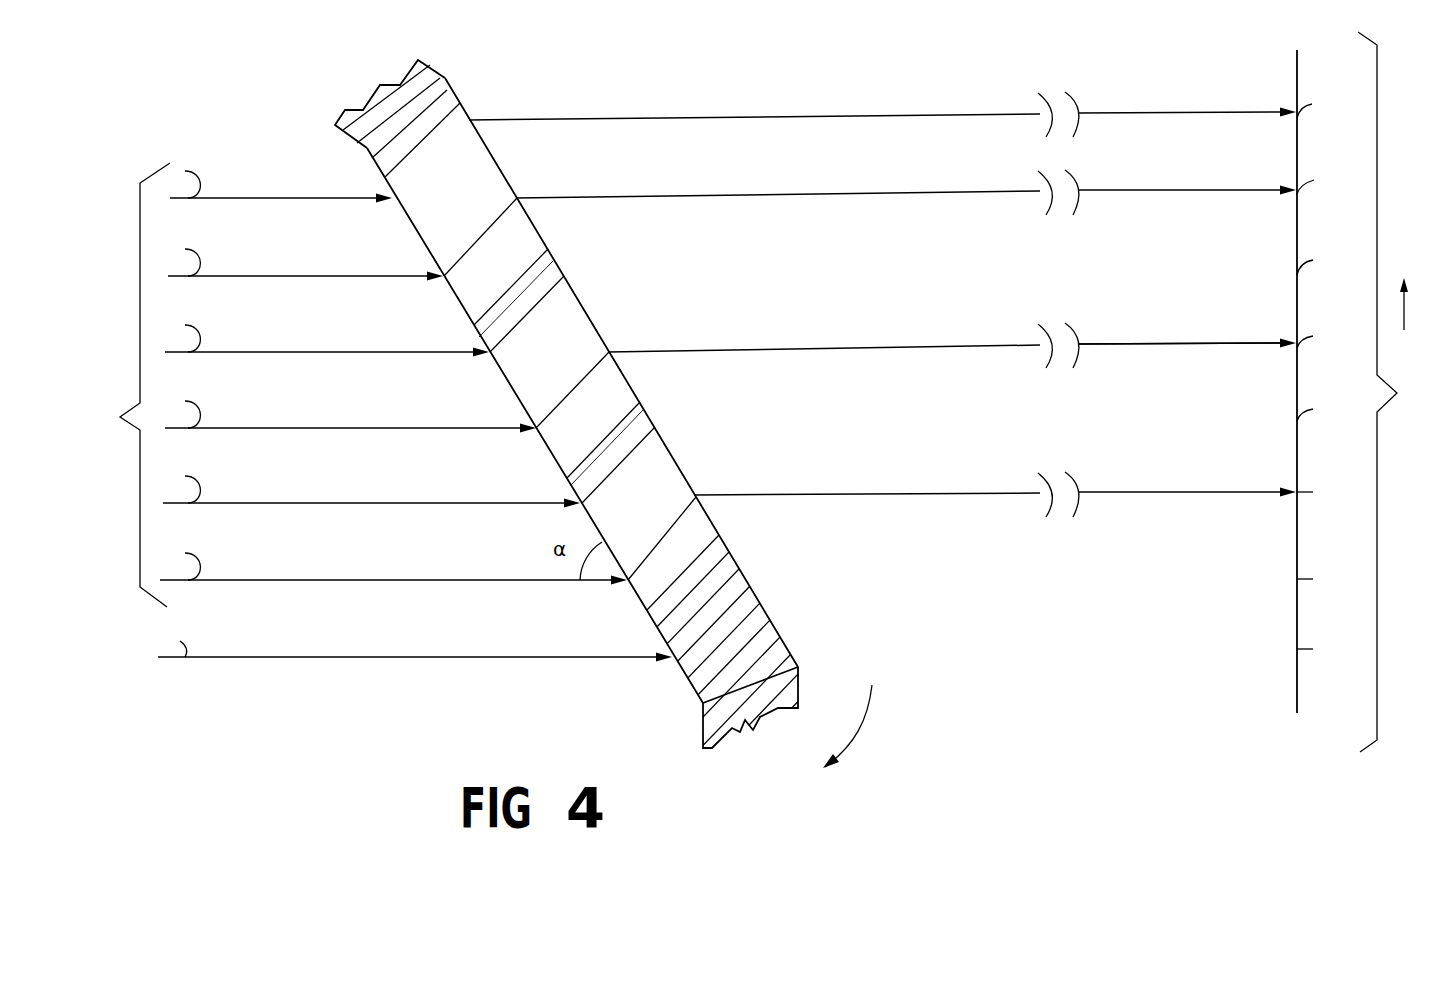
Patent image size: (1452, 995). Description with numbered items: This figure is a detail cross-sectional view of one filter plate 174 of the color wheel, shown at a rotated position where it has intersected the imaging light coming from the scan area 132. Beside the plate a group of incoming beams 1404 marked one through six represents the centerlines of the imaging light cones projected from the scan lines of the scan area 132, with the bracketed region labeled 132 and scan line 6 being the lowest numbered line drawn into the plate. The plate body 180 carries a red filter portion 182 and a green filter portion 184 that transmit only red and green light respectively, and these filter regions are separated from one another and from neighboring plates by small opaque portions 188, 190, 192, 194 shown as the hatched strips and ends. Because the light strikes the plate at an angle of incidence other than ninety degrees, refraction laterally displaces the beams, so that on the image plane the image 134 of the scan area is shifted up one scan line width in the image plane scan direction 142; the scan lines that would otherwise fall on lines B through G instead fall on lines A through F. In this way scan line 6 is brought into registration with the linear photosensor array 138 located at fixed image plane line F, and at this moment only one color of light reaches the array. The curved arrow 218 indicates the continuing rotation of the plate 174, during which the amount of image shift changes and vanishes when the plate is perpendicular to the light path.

The filter plate 174 is at (622, 432).
The plate body 180 is at (672, 458).
The red filter portion 182 is at (477, 177).
The green filter portion 184 is at (570, 327).
The opaque portion 188 is at (432, 65).
The opaque portion 190 is at (562, 263).
The opaque portion 192 is at (642, 410).
The opaque portion 194 is at (800, 690).
The rotation direction of plate 218 is at (873, 713).
The linear photosensor array 138 is at (1298, 462).
The image plane scan direction 142 is at (1426, 304).
The image of the scan area 134 is at (1413, 385).
The scan area 132 is at (382, 400).
The incident beam group 1404 is at (131, 385).
The scan line 6 is at (1193, 342).